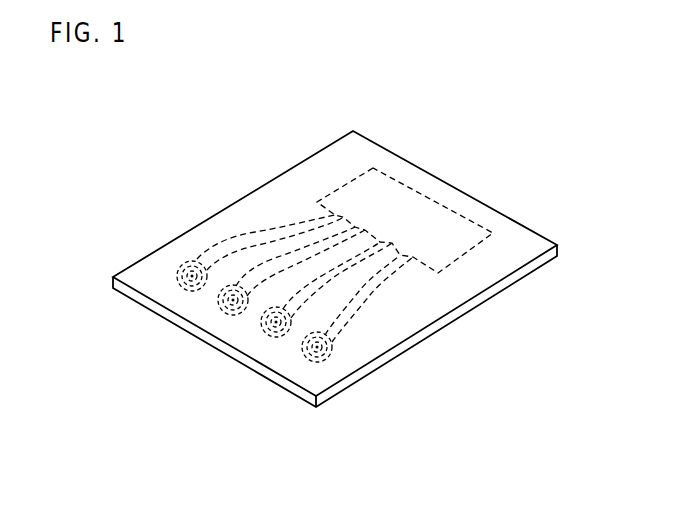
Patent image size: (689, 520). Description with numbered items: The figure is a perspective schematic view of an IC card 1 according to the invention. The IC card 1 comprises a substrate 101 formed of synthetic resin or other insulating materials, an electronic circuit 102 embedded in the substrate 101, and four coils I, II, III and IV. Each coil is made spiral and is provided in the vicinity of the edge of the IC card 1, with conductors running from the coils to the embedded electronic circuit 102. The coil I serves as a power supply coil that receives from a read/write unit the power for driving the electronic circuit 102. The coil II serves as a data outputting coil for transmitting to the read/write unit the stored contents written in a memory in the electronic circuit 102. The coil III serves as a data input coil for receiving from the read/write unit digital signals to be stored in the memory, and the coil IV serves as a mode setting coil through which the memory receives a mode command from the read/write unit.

The IC card 1 is at (388, 133).
The substrate 101 is at (300, 172).
The electronic circuit 102 is at (445, 207).
The coil I is at (187, 287).
The coil II is at (229, 316).
The coil III is at (272, 338).
The coil IV is at (312, 361).